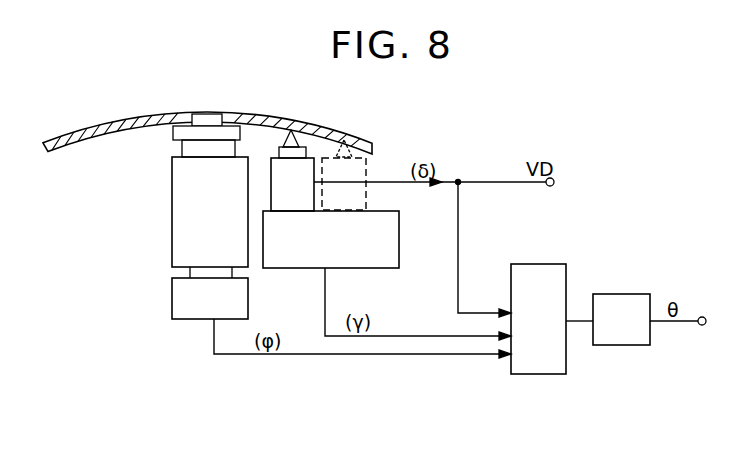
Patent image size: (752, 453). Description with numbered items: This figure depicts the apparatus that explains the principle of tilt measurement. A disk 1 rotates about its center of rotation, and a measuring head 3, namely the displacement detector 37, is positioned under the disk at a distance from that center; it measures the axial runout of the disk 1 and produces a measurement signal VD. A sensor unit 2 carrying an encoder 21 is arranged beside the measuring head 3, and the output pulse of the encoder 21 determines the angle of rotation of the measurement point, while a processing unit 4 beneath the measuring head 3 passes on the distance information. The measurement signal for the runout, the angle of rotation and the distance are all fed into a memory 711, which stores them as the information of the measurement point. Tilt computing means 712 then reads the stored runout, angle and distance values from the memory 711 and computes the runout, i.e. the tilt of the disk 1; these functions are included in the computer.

The disk 1 is at (366, 142).
The sensor body 2 is at (172, 214).
The encoder 21 is at (197, 321).
The measuring head 3 is at (315, 151).
The displacement detector 37 is at (305, 170).
The processing unit 4 is at (401, 241).
The memory 711 is at (540, 375).
The tilt computing means 712 is at (625, 346).